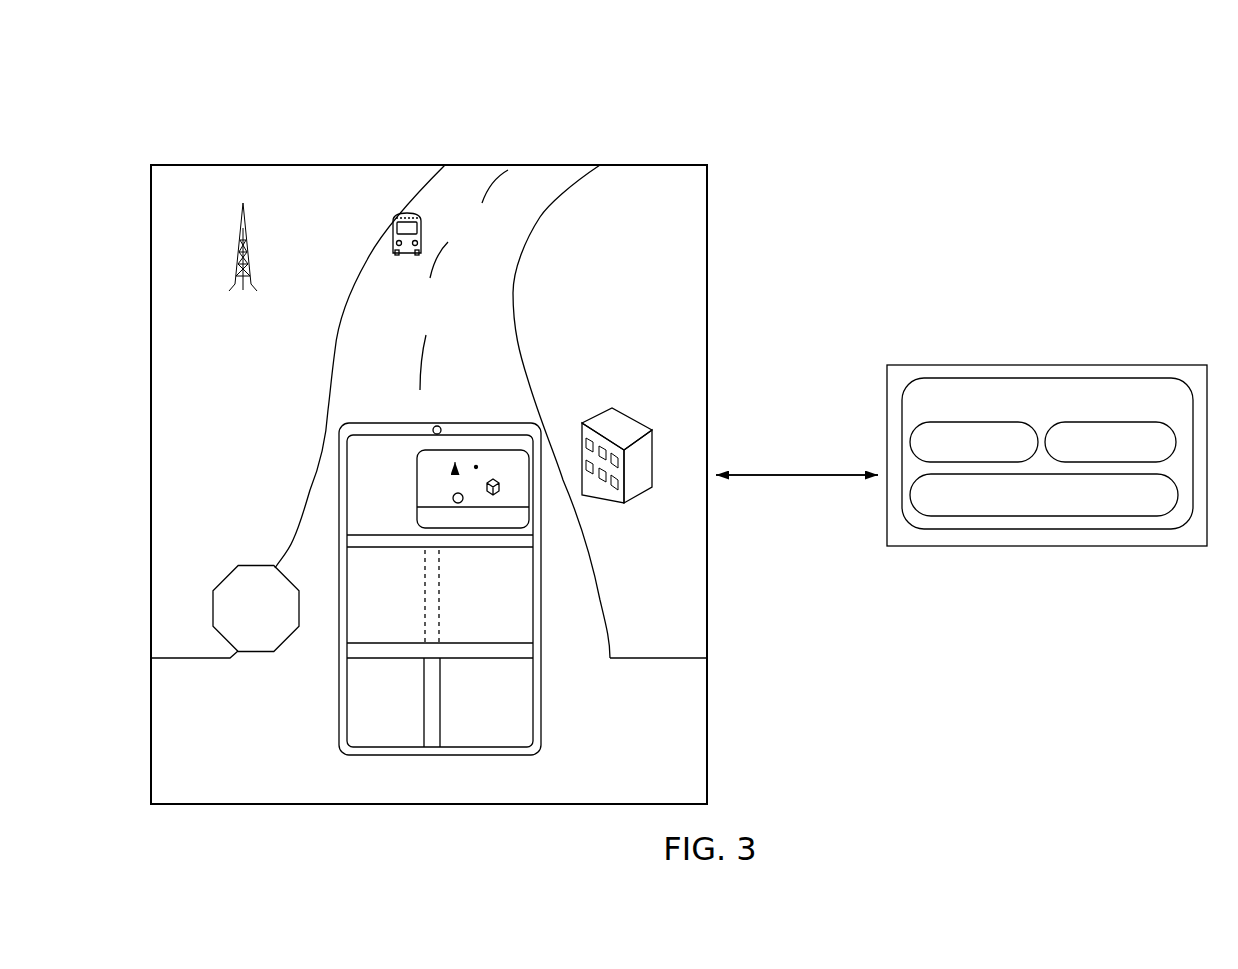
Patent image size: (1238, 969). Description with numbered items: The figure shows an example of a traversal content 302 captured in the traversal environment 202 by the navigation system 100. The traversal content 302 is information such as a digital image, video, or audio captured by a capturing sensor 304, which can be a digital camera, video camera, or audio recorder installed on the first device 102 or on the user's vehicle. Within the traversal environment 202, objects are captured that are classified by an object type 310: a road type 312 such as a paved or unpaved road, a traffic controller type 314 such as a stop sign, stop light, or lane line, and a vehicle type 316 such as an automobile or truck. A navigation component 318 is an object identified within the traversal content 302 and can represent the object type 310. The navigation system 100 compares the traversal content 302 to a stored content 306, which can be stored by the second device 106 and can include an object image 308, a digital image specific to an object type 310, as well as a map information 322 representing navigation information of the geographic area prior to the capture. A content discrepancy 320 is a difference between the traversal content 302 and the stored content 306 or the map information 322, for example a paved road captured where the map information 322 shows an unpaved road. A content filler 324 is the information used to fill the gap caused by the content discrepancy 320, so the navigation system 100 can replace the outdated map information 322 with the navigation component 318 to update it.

The navigation system 100 is at (200, 110).
The traversal environment 202 is at (710, 205).
The first device 102 is at (435, 508).
The second device 106 is at (641, 509).
The traversal content 302 is at (525, 442).
The capturing sensor 304 is at (437, 426).
The stored content 306 is at (1047, 453).
The object image 308 is at (974, 442).
The object type 310 is at (645, 472).
The road type 312 is at (546, 217).
The traffic controller type 314 is at (246, 583).
The vehicle type 316 is at (405, 211).
The navigation component 318 is at (476, 489).
The content discrepancy 320 is at (1110, 442).
The map information 322 is at (120, 666).
The content filler 324 is at (447, 595).